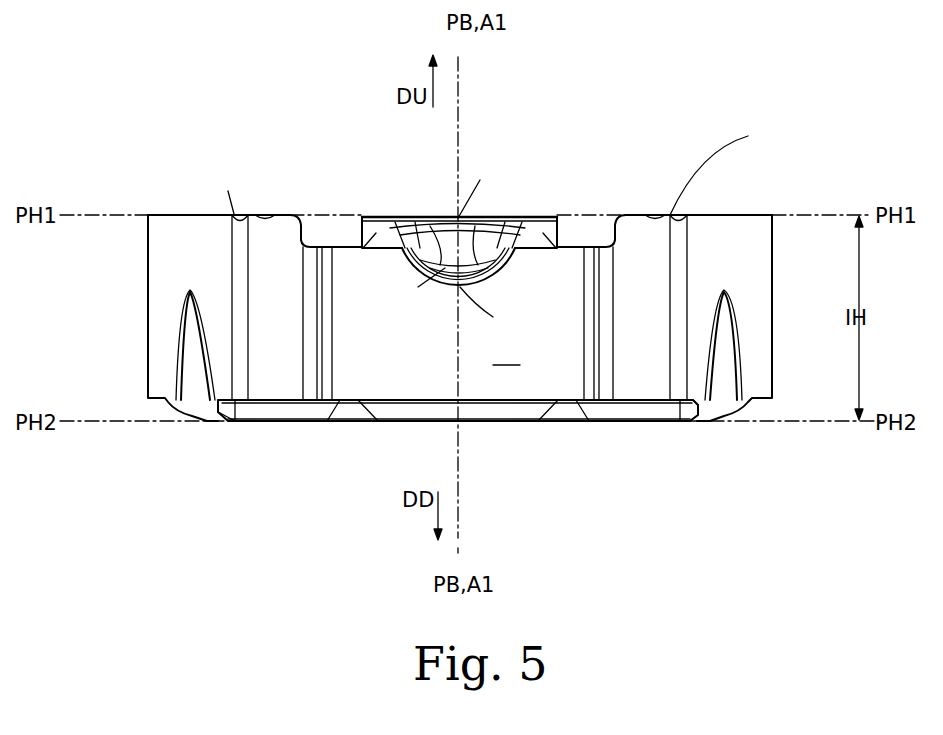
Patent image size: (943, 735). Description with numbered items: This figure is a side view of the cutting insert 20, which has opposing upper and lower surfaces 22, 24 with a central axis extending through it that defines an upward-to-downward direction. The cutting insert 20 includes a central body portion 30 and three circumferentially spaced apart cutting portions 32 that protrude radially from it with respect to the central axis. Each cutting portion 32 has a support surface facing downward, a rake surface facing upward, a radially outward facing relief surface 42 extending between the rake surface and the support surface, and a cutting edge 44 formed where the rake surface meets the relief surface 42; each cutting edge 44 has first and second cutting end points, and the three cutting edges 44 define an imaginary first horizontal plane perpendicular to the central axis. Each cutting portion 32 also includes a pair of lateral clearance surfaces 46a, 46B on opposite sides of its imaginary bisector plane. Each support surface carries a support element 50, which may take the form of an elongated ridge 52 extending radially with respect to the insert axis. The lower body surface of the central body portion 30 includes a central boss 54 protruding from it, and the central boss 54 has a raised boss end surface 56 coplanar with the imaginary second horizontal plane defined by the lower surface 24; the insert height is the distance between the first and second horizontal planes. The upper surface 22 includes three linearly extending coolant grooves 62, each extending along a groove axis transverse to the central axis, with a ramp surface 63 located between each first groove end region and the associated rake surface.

The cutting insert 20 is at (680, 102).
The upper surface 22 is at (328, 240).
The lower surface 24 is at (337, 423).
The central body portion 30 is at (351, 240).
The cutting portion 32 is at (165, 252).
The relief surface 42 is at (220, 271).
The cutting edge 44 is at (188, 214).
The lateral clearance surface 46a is at (292, 328).
The lateral clearance surface 46B is at (666, 308).
The support element 50 is at (278, 410).
The elongated ridge 52 is at (654, 410).
The central boss 54 is at (537, 421).
The raised boss end surface 56 is at (397, 423).
The coolant groove 62 is at (505, 235).
The ramp surface 63 is at (437, 235).